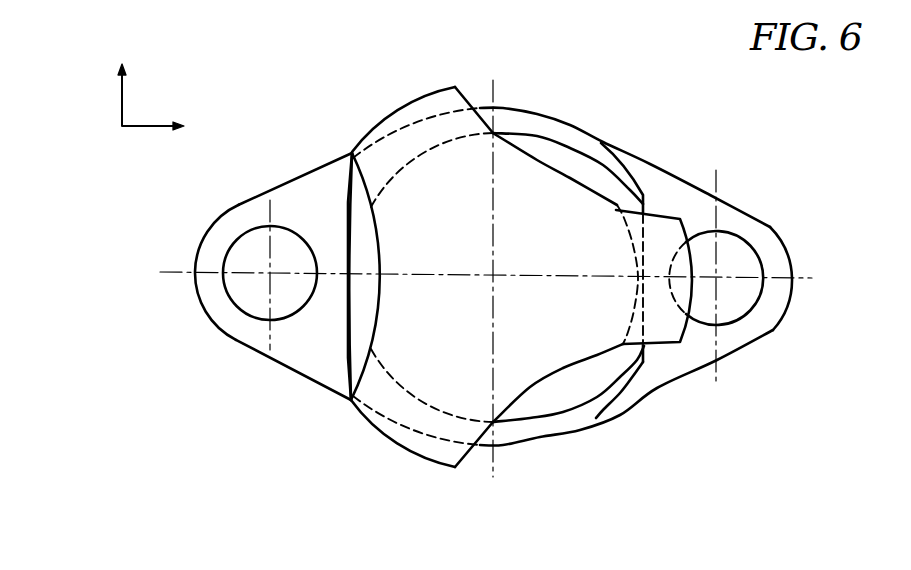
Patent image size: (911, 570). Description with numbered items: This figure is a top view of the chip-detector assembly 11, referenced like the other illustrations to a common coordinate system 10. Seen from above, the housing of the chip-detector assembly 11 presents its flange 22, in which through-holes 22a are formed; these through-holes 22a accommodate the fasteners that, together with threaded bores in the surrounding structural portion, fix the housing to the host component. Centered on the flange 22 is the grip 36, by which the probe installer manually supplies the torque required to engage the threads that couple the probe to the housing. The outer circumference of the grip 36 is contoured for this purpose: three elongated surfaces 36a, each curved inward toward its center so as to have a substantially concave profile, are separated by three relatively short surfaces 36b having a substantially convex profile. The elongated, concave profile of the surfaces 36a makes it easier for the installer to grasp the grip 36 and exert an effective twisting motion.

The coordinate system 10 is at (138, 128).
The chip-detector assembly 11 is at (780, 130).
The flange 22 is at (794, 264).
The through-holes 22a is at (736, 260).
The grip 36 is at (430, 76).
The elongated surfaces 36a is at (462, 93).
The short surfaces 36b is at (368, 131).